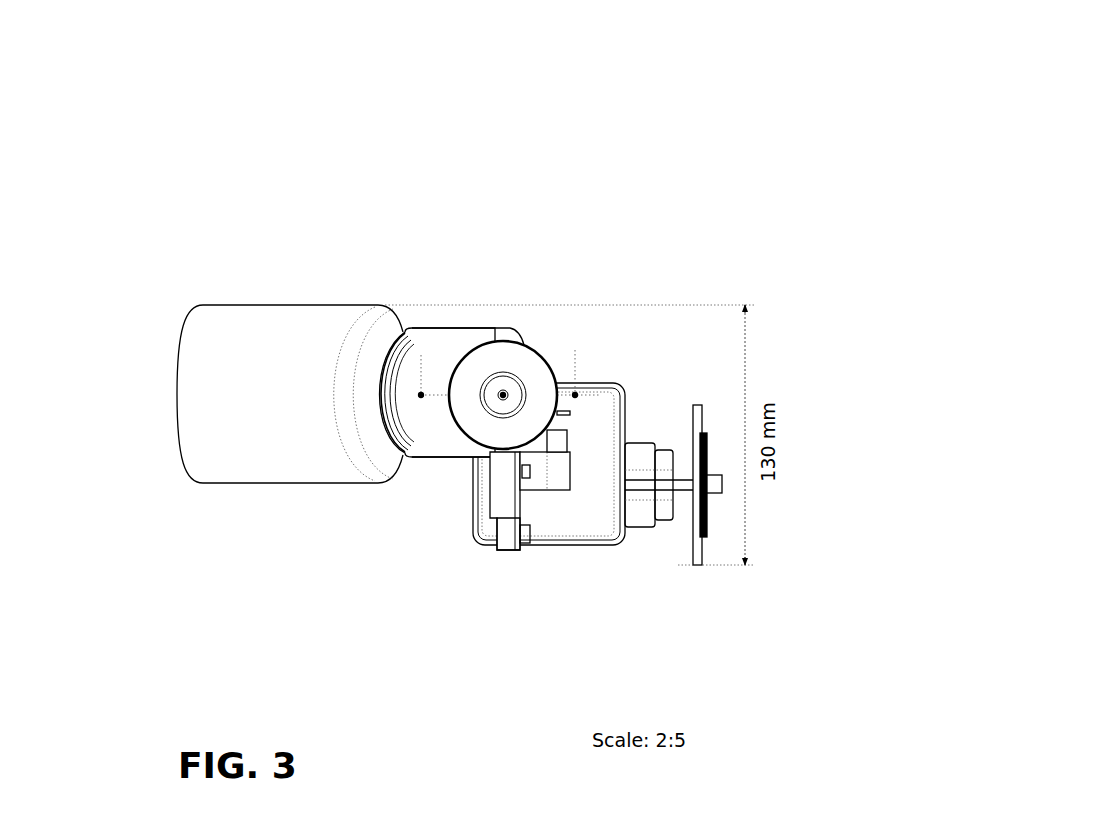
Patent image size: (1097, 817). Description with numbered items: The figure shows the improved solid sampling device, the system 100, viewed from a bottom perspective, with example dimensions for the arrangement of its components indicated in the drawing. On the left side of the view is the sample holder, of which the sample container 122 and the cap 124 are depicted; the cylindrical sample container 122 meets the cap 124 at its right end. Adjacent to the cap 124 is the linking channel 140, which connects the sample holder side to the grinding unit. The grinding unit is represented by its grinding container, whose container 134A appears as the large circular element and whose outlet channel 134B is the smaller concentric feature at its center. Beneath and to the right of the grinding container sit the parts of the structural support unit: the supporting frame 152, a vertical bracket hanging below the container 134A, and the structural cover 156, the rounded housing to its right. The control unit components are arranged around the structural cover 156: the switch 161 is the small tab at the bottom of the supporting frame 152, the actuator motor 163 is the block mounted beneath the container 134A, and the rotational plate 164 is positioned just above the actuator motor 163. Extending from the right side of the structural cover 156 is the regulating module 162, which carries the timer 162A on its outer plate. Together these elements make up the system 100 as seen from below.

The system 100 is at (832, 65).
The sample container 122 is at (218, 358).
The cap 124 is at (407, 332).
The container 134A is at (475, 425).
The outlet channel 134B is at (512, 382).
The linking channel 140 is at (453, 343).
The supporting frame 152 is at (503, 495).
The structural cover 156 is at (570, 547).
The switch 161 is at (507, 543).
The regulating module 162 is at (698, 533).
The timer 162A is at (708, 513).
The actuator motor 163 is at (560, 468).
The rotational plate 164 is at (558, 438).